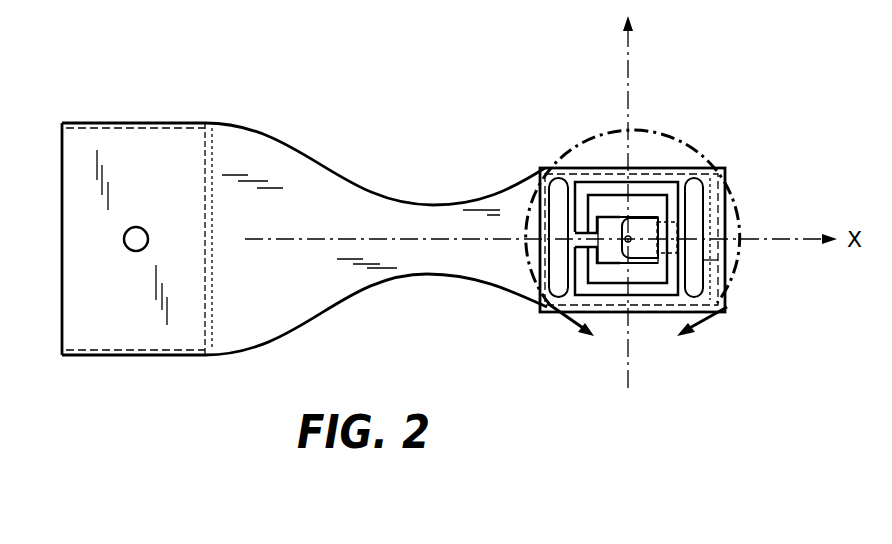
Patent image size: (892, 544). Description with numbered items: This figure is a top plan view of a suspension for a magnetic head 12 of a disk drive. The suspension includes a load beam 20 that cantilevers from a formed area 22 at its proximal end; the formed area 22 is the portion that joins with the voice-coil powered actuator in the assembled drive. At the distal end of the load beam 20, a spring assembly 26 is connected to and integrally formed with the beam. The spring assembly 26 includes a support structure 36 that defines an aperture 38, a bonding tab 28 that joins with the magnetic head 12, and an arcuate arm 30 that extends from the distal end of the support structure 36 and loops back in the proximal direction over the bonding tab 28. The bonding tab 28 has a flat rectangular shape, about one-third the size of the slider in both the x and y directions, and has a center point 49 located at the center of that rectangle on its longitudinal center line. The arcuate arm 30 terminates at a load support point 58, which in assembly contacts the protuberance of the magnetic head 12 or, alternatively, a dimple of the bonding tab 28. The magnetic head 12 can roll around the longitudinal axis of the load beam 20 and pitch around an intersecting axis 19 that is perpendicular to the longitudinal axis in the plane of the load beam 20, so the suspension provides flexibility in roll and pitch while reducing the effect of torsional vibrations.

The magnetic head 12 is at (610, 198).
The intersecting axis 19 is at (628, 90).
The load beam 20 is at (283, 167).
The formed area 22 is at (175, 150).
The spring assembly 26 is at (727, 398).
The bonding tab 28 is at (640, 228).
The arcuate arm 30 is at (700, 262).
The support structure 36 is at (510, 287).
The aperture 38 is at (583, 183).
The center point 49 is at (625, 234).
The load support point 58 is at (662, 236).